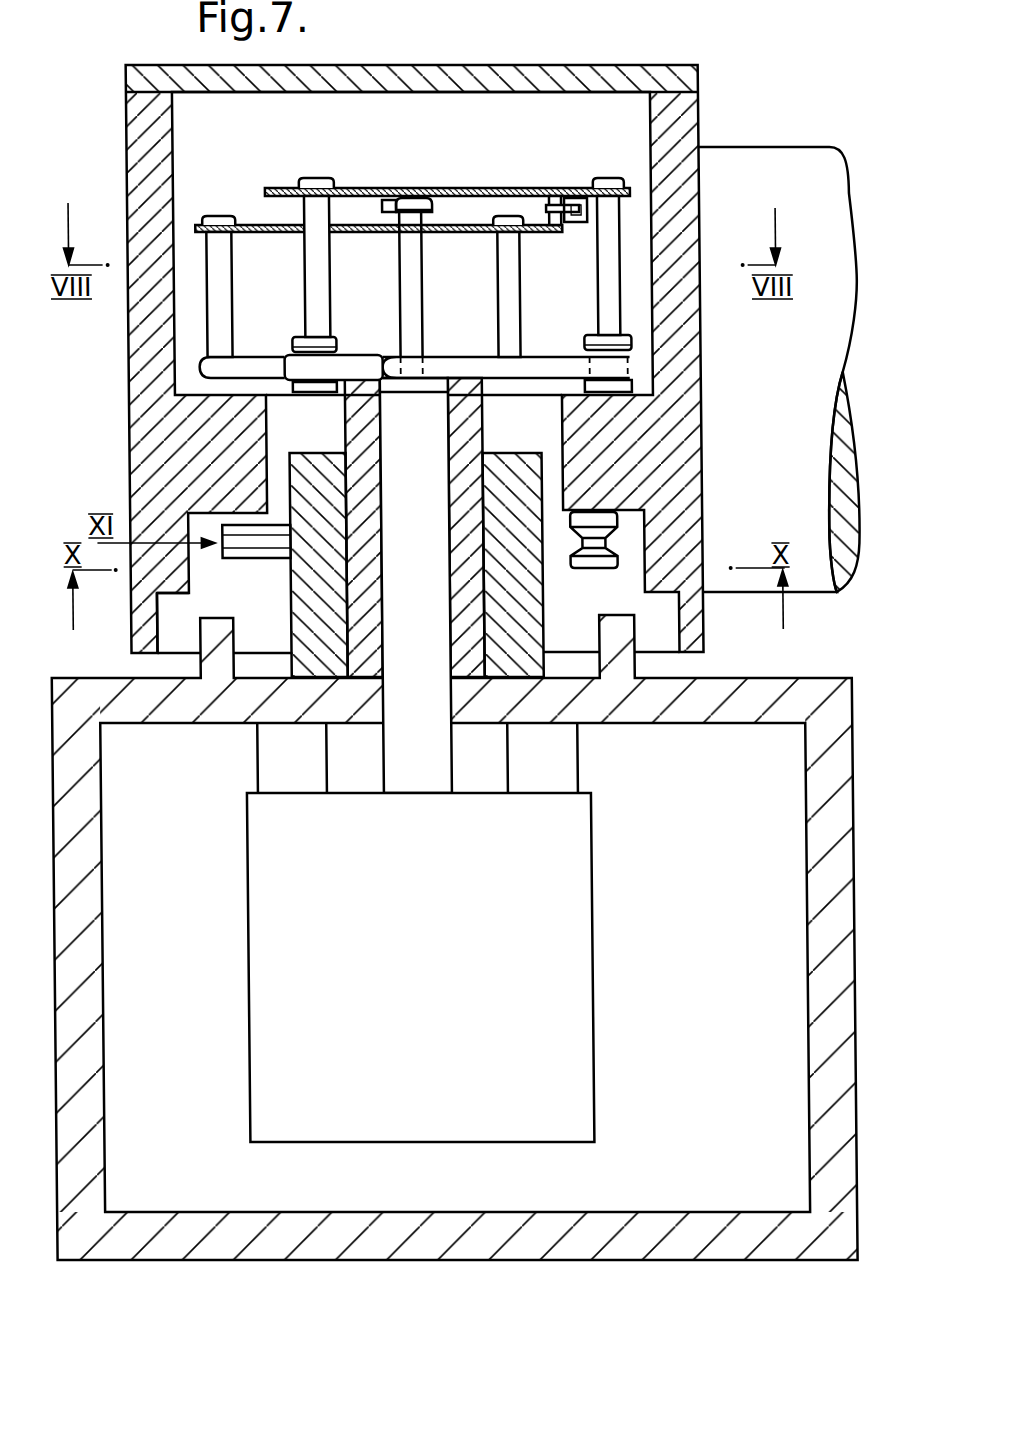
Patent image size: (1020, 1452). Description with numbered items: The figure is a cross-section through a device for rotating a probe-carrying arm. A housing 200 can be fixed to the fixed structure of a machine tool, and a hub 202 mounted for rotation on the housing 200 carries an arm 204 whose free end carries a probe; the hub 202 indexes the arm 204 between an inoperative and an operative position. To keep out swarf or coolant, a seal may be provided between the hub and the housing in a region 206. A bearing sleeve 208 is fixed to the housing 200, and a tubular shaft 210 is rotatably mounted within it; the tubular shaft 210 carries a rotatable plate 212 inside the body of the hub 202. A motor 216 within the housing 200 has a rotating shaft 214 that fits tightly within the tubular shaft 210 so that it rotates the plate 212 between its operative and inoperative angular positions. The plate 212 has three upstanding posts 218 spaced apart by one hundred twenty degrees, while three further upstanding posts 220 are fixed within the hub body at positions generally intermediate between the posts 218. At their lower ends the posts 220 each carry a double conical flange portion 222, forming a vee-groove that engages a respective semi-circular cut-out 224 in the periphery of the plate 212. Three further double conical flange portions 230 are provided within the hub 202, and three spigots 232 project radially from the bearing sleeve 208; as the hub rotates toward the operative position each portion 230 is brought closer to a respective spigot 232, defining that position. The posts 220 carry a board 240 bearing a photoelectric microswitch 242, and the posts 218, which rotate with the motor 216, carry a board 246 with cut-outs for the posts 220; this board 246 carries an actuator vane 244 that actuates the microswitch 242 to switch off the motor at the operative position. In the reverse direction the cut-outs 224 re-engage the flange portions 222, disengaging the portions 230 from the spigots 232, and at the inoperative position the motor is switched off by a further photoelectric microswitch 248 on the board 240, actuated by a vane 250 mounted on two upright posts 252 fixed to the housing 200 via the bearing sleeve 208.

The housing 200 is at (645, 1259).
The hub 202 is at (126, 391).
The arm 204 is at (773, 163).
The region 206 is at (172, 630).
The bearing sleeve 208 is at (298, 659).
The tubular shaft 210 is at (347, 424).
The rotatable plate 212 is at (513, 366).
The rotating shaft 214 is at (427, 752).
The motor 216 is at (545, 956).
The upstanding posts 218 is at (218, 268).
The upstanding posts 220 is at (313, 268).
The double conical flange portion 222 is at (288, 344).
The semi-circular cut-out 224 is at (357, 357).
The double conical flange portions 230 is at (615, 533).
The spigots 232 is at (237, 525).
The board 240 is at (278, 187).
The photoelectric microswitch 242 is at (581, 188).
The actuator vane 244 is at (554, 197).
The board 246 is at (461, 232).
The photoelectric microswitch 248 is at (423, 187).
The vane 250 is at (379, 203).
The upright posts 252 is at (410, 320).